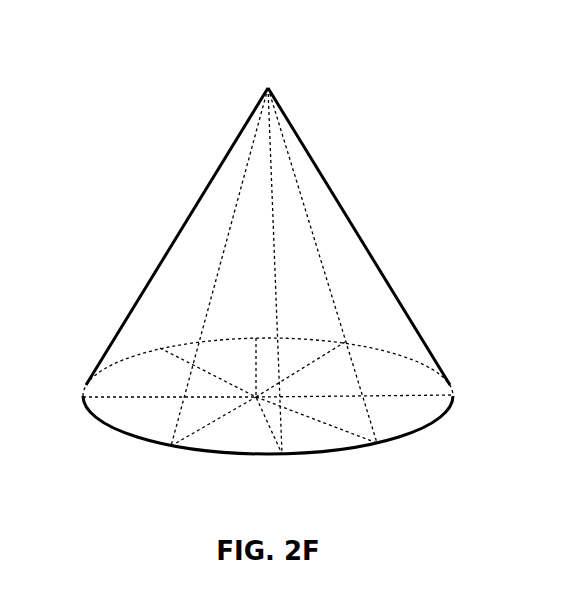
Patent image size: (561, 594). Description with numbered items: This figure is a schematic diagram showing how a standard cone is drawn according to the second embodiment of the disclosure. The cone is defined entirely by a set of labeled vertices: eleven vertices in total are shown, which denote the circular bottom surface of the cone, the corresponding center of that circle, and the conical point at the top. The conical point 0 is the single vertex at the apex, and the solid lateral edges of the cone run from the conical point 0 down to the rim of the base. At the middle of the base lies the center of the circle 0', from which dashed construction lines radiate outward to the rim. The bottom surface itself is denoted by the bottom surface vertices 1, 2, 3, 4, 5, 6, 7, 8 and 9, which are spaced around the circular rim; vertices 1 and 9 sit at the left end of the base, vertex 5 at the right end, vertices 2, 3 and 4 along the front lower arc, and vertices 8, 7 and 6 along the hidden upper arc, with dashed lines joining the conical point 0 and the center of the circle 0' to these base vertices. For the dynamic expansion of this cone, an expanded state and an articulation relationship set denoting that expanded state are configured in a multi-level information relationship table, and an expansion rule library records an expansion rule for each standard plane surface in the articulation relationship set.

The conical point 0 is at (268, 210).
The center of a circle 0' is at (260, 396).
The bottom surface vertex 1 is at (154, 396).
The bottom surface vertex 2 is at (210, 291).
The bottom surface vertex 3 is at (279, 292).
The bottom surface vertex 4 is at (321, 289).
The bottom surface vertex 5 is at (368, 410).
The bottom surface vertex 6 is at (313, 352).
The bottom surface vertex 7 is at (268, 345).
The bottom surface vertex 8 is at (198, 352).
The bottom surface vertex 9 is at (255, 425).